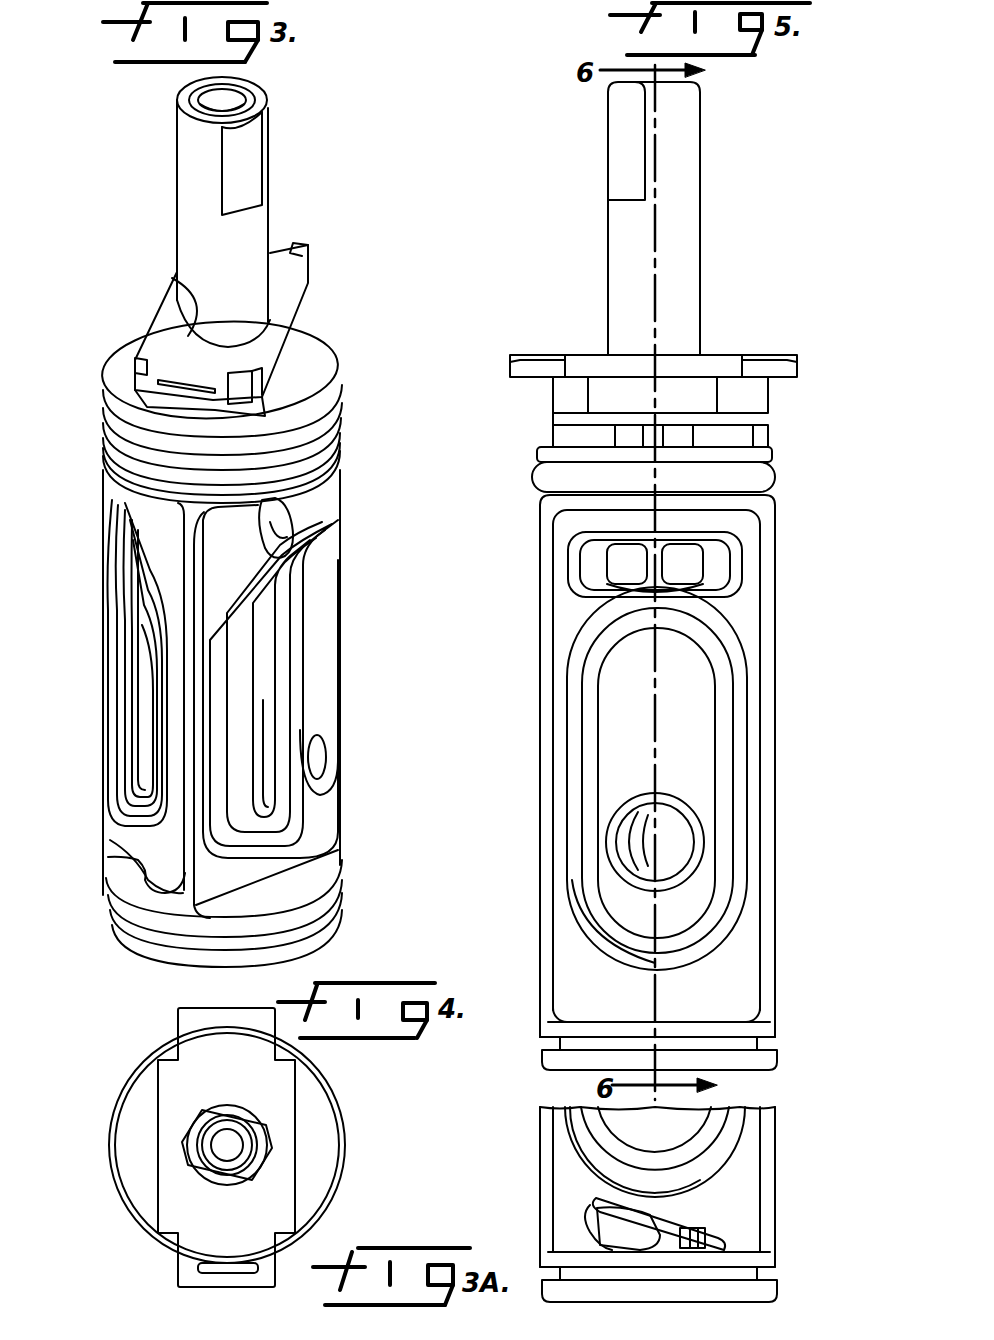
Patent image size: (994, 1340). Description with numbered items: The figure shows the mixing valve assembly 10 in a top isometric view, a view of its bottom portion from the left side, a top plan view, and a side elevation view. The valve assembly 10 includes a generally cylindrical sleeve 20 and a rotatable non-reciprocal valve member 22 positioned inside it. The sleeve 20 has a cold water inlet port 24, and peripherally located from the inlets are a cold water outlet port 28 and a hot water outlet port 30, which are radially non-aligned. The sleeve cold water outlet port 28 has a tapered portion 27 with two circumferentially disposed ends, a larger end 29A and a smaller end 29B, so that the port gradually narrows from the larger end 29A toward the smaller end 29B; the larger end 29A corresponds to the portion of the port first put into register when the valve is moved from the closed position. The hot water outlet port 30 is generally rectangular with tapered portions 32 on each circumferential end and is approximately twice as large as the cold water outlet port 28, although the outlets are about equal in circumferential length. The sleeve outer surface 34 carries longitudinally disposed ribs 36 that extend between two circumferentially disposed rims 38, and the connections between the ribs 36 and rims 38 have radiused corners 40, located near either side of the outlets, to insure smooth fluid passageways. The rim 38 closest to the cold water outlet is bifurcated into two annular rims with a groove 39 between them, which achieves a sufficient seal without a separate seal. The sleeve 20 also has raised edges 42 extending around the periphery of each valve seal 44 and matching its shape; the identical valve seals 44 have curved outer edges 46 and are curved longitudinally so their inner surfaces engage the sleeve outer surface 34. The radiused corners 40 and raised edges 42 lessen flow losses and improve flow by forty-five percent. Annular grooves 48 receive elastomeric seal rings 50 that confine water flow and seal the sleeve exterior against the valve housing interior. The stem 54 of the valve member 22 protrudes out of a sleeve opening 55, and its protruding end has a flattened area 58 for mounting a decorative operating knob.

In FIG. 3, the mixing valve assembly 10 is at (92, 365).
In FIG. 4, the mixing valve assembly 10 is at (110, 1076).
In FIG. 5, the mixing valve assembly 10 is at (720, 302).
In FIG. 3, the sleeve 20 is at (318, 378).
In FIG. 4, the sleeve 20 is at (127, 1167).
In FIG. 5, the sleeve 20 is at (725, 346).
In FIG. 5, the valve member 22 is at (650, 806).
In FIG. 3, the cold water inlet port 24 is at (322, 757).
In FIG. 5, the cold water inlet port 24 is at (690, 853).
In FIG. 3A, the tapered portion 27 is at (690, 1222).
In FIG. 3, the cold water outlet port 28 is at (108, 857).
In FIG. 3A, the cold water outlet port 28 is at (606, 1216).
In FIG. 3A, the larger end 29A is at (618, 1228).
In FIG. 3A, the smaller end 29B is at (706, 1235).
In FIG. 3, the hot water outlet port 30 is at (290, 525).
In FIG. 5, the hot water outlet port 30 is at (700, 577).
In FIG. 5, the tapered portions 32 is at (572, 562).
In FIG. 3, the sleeve outer surface 34 is at (146, 538).
In FIG. 5, the sleeve outer surface 34 is at (576, 996).
In FIG. 3A, the sleeve outer surface 34 is at (656, 1179).
In FIG. 3, the ribs 36 is at (196, 881).
In FIG. 5, the ribs 36 is at (540, 948).
In FIG. 3A, the ribs 36 is at (540, 1131).
In FIG. 3, the rims 38 is at (113, 471).
In FIG. 5, the rims 38 is at (538, 504).
In FIG. 3A, the rims 38 is at (772, 1260).
In FIG. 5, the groove 39 is at (560, 1043).
In FIG. 3A, the groove 39 is at (562, 1274).
In FIG. 3, the radiused corners 40 is at (218, 522).
In FIG. 5, the radiused corners 40 is at (762, 516).
In FIG. 3, the raised edges 42 is at (112, 830).
In FIG. 5, the raised edges 42 is at (566, 859).
In FIG. 3, the valve seals 44 is at (333, 642).
In FIG. 5, the valve seals 44 is at (700, 758).
In FIG. 3A, the valve seals 44 is at (742, 1113).
In FIG. 5, the curved outer edges 46 is at (576, 641).
In FIG. 5, the annular grooves 48 is at (545, 472).
In FIG. 3, the seal rings 50 is at (322, 438).
In FIG. 4, the seal rings 50 is at (335, 1082).
In FIG. 5, the seal rings 50 is at (771, 476).
In FIG. 3, the stem 54 is at (184, 233).
In FIG. 4, the stem 54 is at (268, 1125).
In FIG. 5, the stem 54 is at (612, 233).
In FIG. 3, the sleeve opening 55 is at (170, 287).
In FIG. 3, the flattened area 58 is at (188, 84).
In FIG. 4, the flattened area 58 is at (200, 1120).
In FIG. 5, the flattened area 58 is at (622, 138).